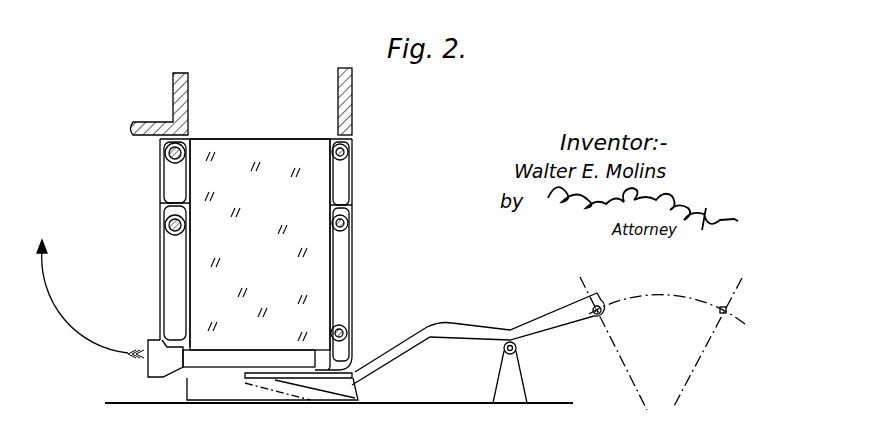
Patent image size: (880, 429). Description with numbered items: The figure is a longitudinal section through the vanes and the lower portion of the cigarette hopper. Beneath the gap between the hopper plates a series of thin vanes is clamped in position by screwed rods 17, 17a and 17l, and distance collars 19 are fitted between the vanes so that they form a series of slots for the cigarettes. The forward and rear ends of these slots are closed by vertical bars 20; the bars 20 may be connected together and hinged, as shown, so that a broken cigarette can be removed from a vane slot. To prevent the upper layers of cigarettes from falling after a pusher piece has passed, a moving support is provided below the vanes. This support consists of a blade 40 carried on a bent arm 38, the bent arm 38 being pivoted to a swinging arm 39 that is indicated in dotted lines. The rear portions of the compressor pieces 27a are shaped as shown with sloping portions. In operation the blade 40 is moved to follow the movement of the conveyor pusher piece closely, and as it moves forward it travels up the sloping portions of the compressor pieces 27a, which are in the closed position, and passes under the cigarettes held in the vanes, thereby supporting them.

The screwed rod 17a is at (346, 152).
The screwed rod 17 is at (347, 223).
The lower screw 17l is at (346, 332).
The vertical bar 20 is at (162, 172).
The distance collar 19 is at (260, 244).
The blade 40 is at (276, 378).
The compressor piece 27a is at (335, 397).
The bent arm 38 is at (452, 329).
The swinging arm 39 is at (720, 310).